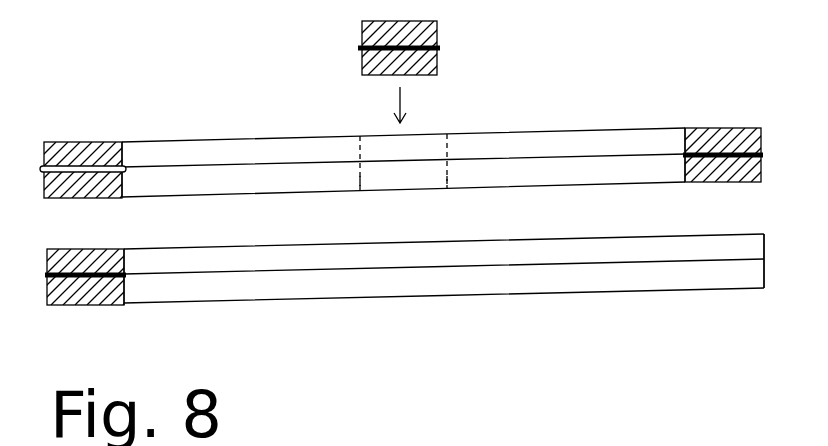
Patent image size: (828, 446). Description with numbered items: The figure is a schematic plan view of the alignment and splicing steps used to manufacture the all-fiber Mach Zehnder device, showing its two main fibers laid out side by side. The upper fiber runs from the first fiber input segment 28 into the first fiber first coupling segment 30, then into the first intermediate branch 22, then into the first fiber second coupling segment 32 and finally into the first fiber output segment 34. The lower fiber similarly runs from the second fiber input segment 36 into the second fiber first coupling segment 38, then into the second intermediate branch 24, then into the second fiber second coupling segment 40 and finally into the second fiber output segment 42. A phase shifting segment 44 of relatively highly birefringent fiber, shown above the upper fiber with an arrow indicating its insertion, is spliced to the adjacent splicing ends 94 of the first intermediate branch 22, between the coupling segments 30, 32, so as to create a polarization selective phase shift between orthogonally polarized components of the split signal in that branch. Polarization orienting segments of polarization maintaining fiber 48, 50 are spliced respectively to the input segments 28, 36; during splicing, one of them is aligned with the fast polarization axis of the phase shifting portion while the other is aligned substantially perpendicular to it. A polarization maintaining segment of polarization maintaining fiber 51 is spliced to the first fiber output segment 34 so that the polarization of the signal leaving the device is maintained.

The first intermediate branch 22 is at (469, 118).
The second intermediate branch 24 is at (416, 312).
The first fiber input segment 28 is at (131, 128).
The first fiber first coupling segment 30 is at (214, 122).
The first fiber second coupling segment 32 is at (593, 120).
The first fiber output segment 34 is at (675, 115).
The second fiber input segment 36 is at (143, 314).
The second fiber first coupling segment 38 is at (226, 310).
The second fiber second coupling segment 40 is at (597, 304).
The second fiber output segment 42 is at (714, 302).
The phase shifting segment 44 is at (437, 58).
The polarization orienting segment of polarization maintaining fiber 48 is at (120, 113).
The polarization orienting segment of polarization maintaining fiber 50 is at (86, 292).
The polarization maintaining segment of polarization maintaining fiber 51 is at (729, 137).
The splicing ends 94 is at (360, 175).